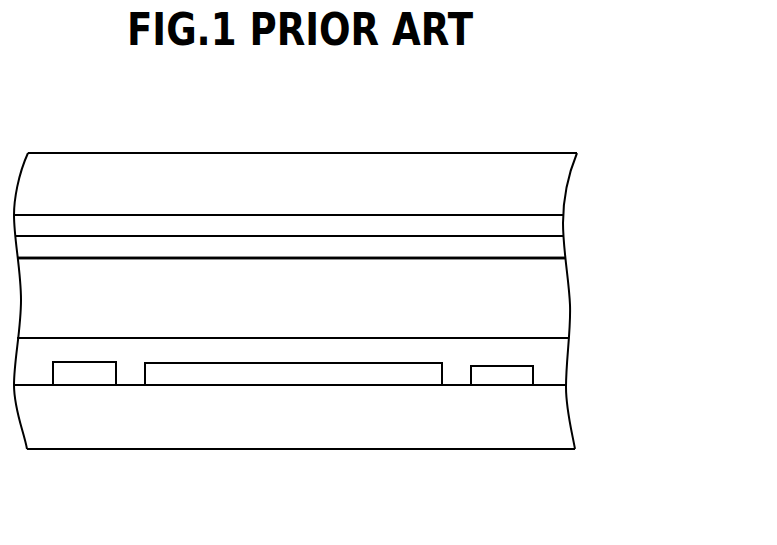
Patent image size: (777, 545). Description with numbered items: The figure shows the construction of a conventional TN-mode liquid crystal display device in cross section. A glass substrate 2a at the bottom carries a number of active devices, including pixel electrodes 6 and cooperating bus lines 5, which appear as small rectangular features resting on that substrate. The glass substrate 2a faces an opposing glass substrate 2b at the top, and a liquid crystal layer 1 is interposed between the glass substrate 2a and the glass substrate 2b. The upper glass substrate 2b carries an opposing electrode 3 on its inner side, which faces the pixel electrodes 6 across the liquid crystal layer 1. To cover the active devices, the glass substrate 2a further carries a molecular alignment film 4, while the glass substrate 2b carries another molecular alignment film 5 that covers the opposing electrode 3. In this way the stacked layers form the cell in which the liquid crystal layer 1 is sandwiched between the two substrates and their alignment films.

The liquid crystal layer 1 is at (556, 306).
The glass substrate 2a is at (555, 423).
The glass substrate 2b is at (555, 194).
The opposing electrode 3 is at (555, 231).
The molecular alignment film 4 is at (555, 369).
The bus lines / molecular alignment film 5 is at (556, 256).
The pixel electrodes 6 is at (292, 378).